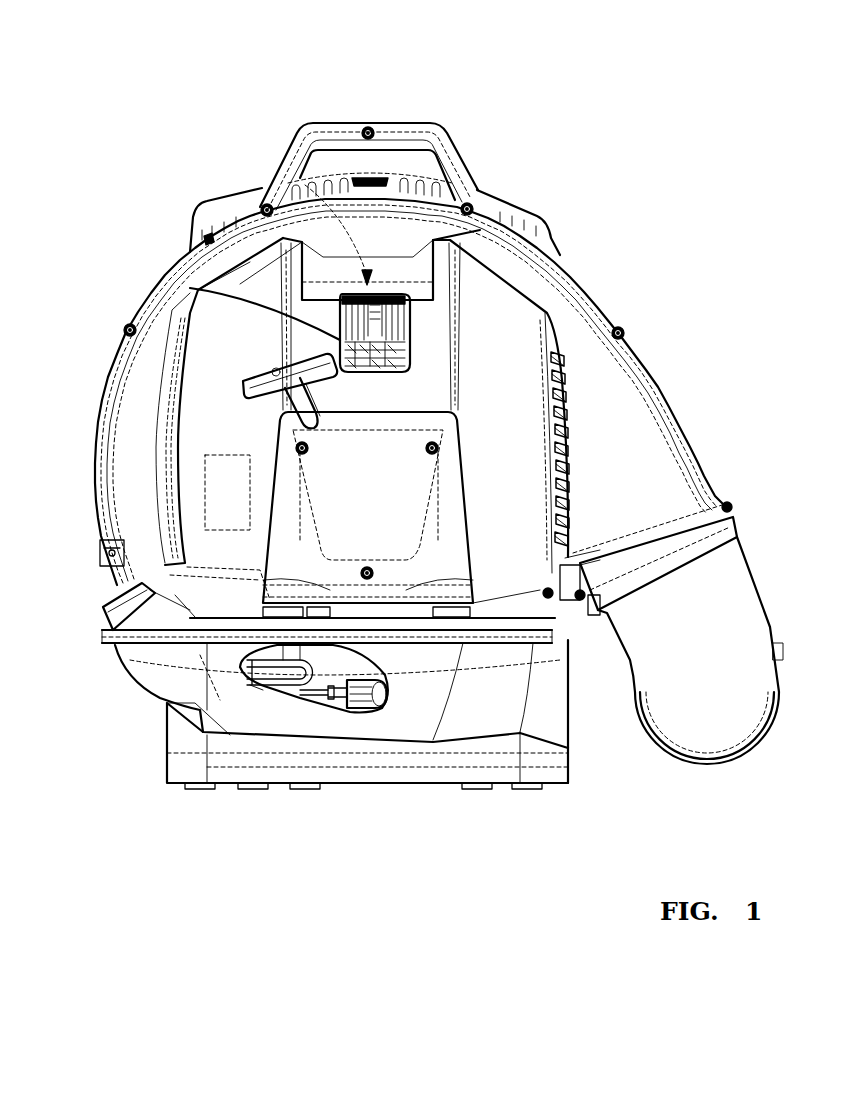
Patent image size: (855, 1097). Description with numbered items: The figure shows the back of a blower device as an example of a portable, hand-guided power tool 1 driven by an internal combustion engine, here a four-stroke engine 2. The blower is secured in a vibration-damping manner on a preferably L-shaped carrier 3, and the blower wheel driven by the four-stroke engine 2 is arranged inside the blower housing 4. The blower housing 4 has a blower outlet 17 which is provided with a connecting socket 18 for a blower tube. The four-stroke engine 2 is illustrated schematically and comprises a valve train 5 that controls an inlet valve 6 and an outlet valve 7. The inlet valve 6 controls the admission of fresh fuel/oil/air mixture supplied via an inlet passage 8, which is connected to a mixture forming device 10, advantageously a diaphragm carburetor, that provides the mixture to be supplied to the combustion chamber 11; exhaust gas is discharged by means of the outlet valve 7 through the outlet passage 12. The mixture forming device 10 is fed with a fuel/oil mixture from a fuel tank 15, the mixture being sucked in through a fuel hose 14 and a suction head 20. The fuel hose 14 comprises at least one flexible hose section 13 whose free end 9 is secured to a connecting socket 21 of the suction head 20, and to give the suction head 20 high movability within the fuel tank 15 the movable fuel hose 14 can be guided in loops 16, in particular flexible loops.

The power tool 1 is at (262, 135).
The four-stroke engine 2 is at (270, 184).
The carrier 3 is at (180, 762).
The blower housing 4 is at (123, 408).
The valve train 5 is at (407, 300).
The inlet valve 6 is at (330, 298).
The outlet valve 7 is at (408, 330).
The inlet passage 8 is at (190, 287).
The free end 9 is at (317, 697).
The mixture forming device 10 is at (215, 489).
The combustion chamber 11 is at (400, 364).
The outlet passage 12 is at (405, 357).
The flexible hose section 13 is at (263, 690).
The fuel hose 14 is at (262, 662).
The fuel tank 15 is at (427, 697).
The loops 16 is at (258, 683).
The blower outlet 17 is at (598, 380).
The connecting socket 18 is at (728, 642).
The suction head 20 is at (363, 700).
The connecting socket 21 is at (331, 697).